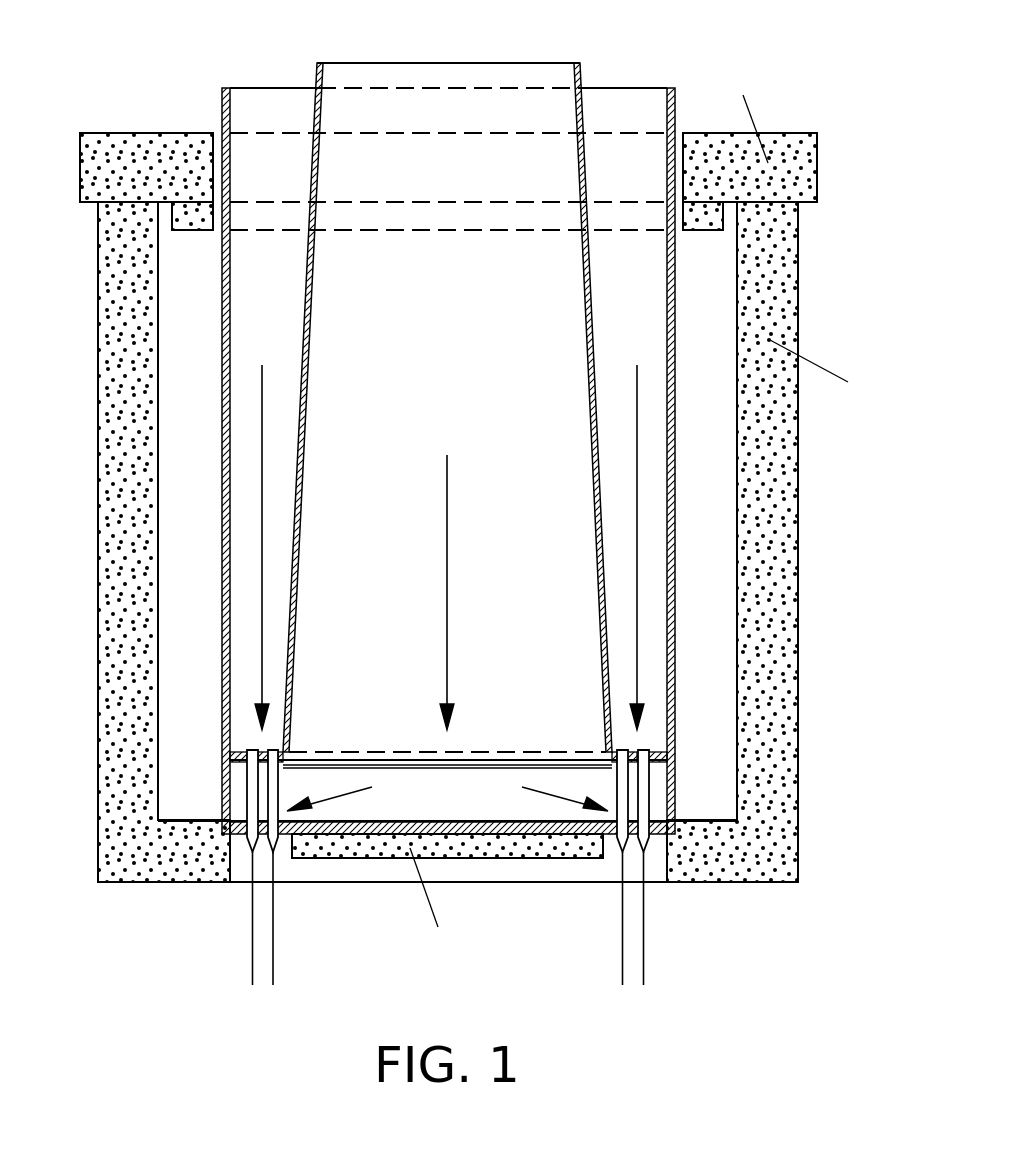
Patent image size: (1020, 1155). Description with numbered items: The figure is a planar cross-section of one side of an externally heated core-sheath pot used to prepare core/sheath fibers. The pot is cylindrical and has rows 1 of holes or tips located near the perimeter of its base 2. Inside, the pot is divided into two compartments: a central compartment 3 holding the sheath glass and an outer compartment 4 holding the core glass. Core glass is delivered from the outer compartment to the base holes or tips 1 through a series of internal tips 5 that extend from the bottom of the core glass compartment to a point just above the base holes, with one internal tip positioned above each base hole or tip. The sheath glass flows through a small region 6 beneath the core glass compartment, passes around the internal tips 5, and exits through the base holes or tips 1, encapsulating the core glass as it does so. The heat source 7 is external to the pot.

The rows of holes or tips 1 is at (243, 836).
The base 2 is at (557, 823).
The central compartment 3 is at (447, 407).
The outer compartment 4 is at (448, 461).
The internal tips 5 is at (250, 790).
The small region 6 is at (380, 803).
The heat source 7 is at (493, 445).